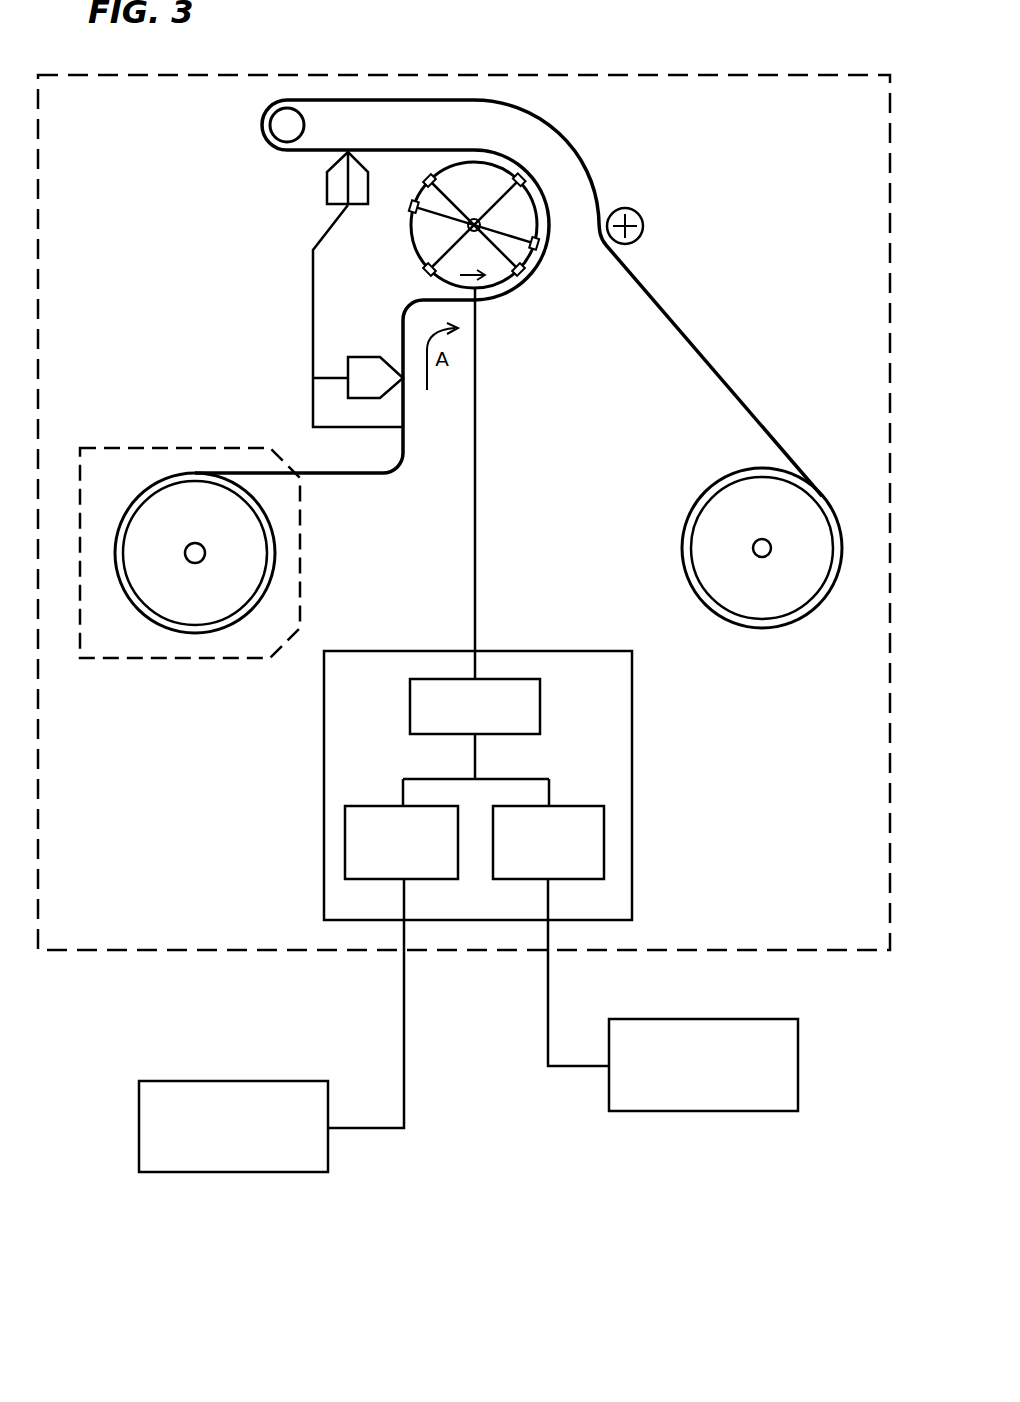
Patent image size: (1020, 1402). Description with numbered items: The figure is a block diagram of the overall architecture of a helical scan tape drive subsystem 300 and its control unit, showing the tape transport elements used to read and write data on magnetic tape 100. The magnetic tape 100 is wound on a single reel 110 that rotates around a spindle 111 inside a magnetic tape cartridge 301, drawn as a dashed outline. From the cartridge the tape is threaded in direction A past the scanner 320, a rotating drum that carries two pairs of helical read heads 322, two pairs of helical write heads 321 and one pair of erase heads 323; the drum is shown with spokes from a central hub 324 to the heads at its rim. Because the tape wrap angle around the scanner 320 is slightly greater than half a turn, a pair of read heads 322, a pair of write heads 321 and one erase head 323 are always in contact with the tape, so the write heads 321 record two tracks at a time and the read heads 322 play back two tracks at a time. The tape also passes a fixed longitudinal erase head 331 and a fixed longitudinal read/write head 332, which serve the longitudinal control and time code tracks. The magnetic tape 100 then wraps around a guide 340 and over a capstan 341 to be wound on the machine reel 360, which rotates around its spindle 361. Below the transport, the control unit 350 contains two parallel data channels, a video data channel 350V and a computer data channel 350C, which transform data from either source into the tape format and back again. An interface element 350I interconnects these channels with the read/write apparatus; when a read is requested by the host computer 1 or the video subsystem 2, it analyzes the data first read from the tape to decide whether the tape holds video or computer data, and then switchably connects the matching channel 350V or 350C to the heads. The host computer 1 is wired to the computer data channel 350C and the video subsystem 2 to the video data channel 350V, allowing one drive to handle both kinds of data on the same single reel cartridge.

The host processor 1 is at (238, 1173).
The video subsystem 2 is at (720, 1112).
The magnetic tape 100 is at (363, 477).
The single reel 110 is at (243, 570).
The spindle 111 is at (188, 563).
The helical scan tape drive subsystem 300 is at (235, 955).
The magnetic tape cartridge 301 is at (215, 662).
The scanner 320 is at (413, 250).
The helical write heads 321 is at (533, 282).
The helical read heads 322 is at (523, 168).
The erase heads 323 is at (545, 245).
The rotary head assembly 324 is at (474, 225).
The fixed longitudinal erase head 331 is at (366, 206).
The fixed longitudinal read/write head 332 is at (325, 178).
The guide 340 is at (260, 110).
The capstan 341 is at (644, 226).
The control unit 350 is at (578, 650).
The interface element 350I is at (410, 700).
The computer data channel 350C is at (362, 806).
The video data channel 350V is at (583, 806).
The machine reel 360 is at (743, 598).
The spindle 361 is at (760, 540).